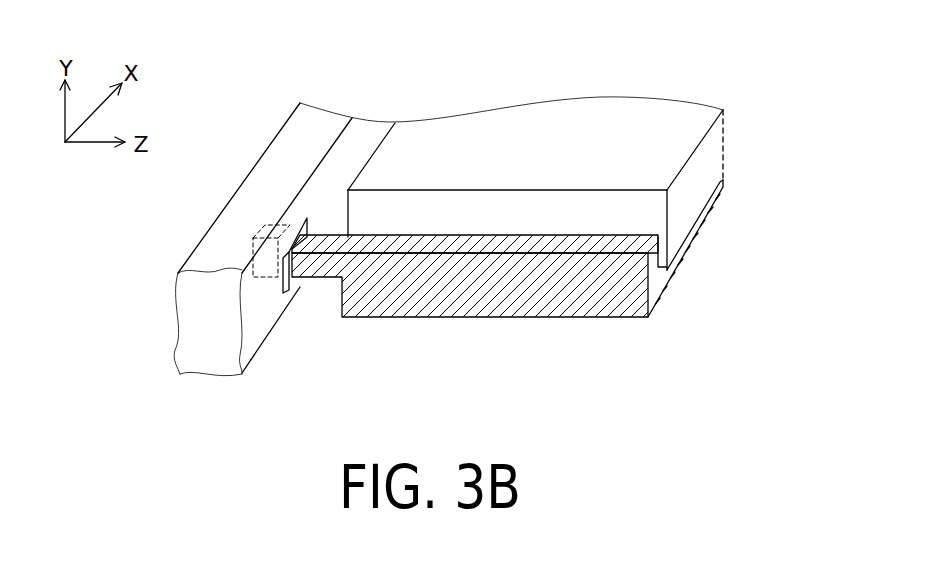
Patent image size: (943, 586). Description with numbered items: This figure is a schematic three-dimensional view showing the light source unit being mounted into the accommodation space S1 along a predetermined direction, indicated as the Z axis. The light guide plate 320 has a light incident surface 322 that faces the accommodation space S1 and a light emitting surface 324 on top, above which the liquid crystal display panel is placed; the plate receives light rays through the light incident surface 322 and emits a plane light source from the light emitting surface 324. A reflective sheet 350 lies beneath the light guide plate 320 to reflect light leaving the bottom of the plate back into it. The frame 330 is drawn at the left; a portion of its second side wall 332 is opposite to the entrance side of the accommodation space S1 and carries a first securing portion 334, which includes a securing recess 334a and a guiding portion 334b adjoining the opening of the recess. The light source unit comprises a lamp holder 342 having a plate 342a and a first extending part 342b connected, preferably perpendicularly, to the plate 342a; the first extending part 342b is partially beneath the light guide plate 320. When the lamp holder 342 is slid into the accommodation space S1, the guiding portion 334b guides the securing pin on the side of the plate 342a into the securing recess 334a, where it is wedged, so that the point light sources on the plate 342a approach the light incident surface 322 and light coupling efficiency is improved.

The light guide plate 320 is at (718, 145).
The light incident surface 322 is at (630, 217).
The light emitting surface 324 is at (598, 143).
The frame 330 is at (288, 134).
The second side wall 332 is at (350, 153).
The first securing portion 334 is at (319, 323).
The securing recess 334a is at (267, 265).
The guiding portion 334b is at (292, 280).
The lamp holder 342 is at (471, 293).
The plate 342a is at (718, 373).
The first extending part 342b is at (662, 283).
The reflective sheet 350 is at (717, 193).
The accommodation space S1 is at (329, 300).